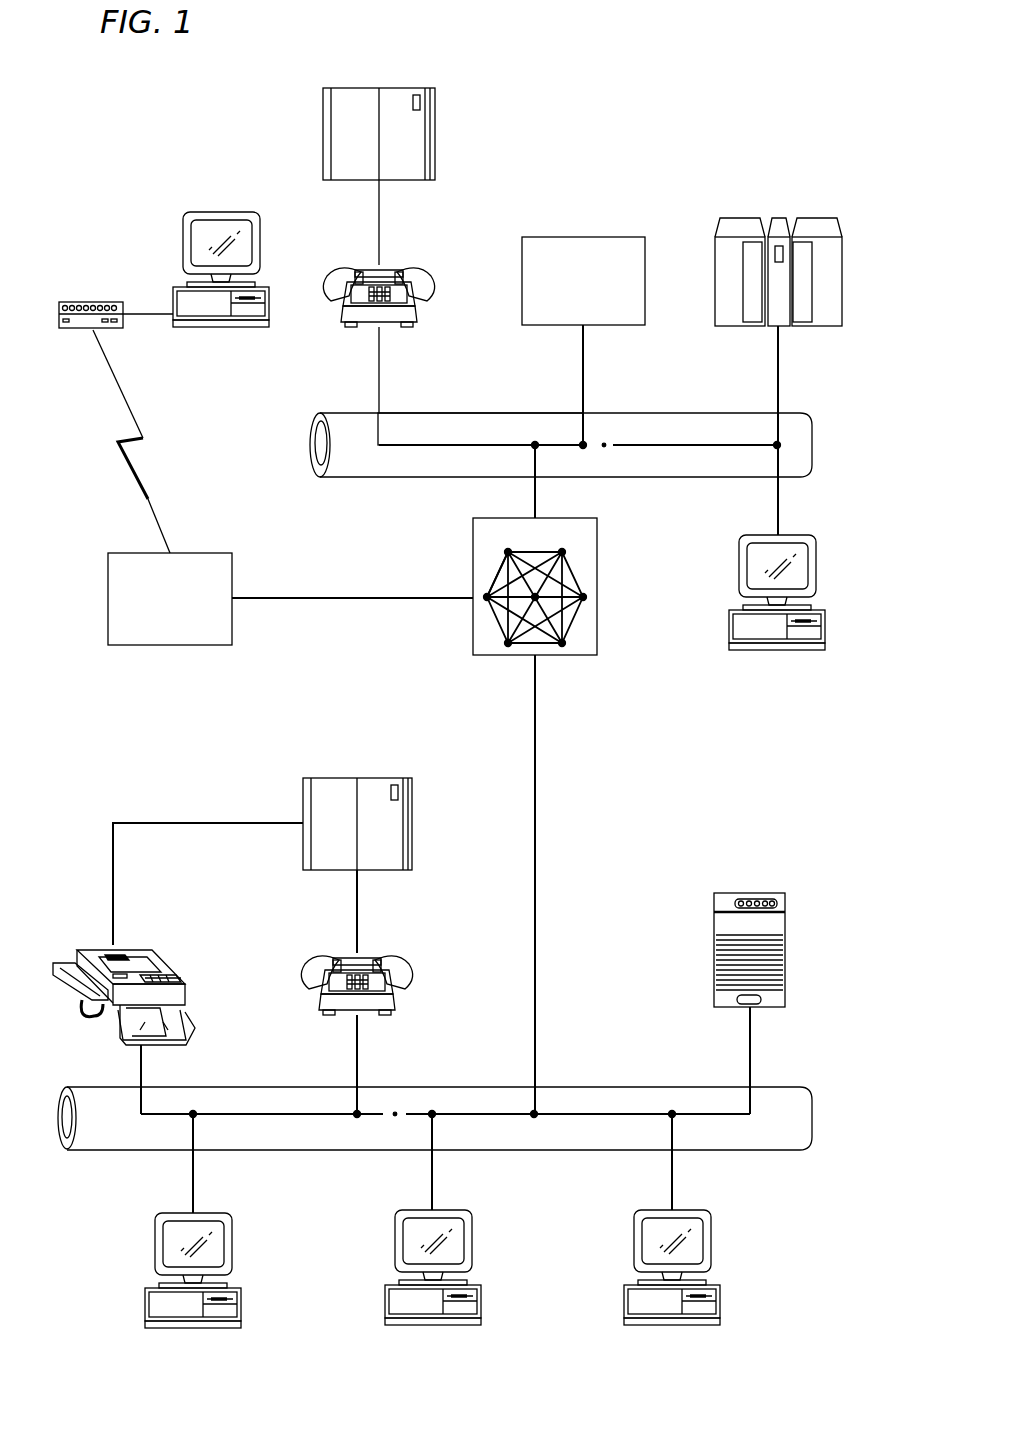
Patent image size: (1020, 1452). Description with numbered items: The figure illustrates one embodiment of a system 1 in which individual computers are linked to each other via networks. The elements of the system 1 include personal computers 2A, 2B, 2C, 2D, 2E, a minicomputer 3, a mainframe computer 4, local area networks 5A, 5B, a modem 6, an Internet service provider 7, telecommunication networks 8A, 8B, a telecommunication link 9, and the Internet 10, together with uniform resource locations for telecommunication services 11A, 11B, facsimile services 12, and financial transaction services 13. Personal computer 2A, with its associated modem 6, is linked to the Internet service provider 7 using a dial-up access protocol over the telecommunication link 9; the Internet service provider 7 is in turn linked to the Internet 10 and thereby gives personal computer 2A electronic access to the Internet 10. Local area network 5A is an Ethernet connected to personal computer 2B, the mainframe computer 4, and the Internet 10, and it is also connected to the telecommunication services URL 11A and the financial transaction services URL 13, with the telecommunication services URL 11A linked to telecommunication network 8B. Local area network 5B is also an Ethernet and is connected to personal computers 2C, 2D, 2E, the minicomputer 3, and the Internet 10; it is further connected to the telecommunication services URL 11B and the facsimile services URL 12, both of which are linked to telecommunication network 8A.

The system 1 is at (151, 77).
The personal computer 2A is at (222, 212).
The personal computer 2B is at (816, 568).
The personal computer 2C is at (233, 1245).
The personal computer 2D is at (472, 1243).
The personal computer 2E is at (708, 1243).
The minicomputer 3 is at (749, 893).
The mainframe computer 4 is at (778, 218).
The local area network 5A is at (310, 442).
The local area network 5B is at (623, 1087).
The modem 6 is at (92, 302).
The Internet service provider 7 is at (108, 598).
The telecommunication network 8A is at (357, 778).
The telecommunication network 8B is at (437, 132).
The telecommunication link 9 is at (136, 474).
The Internet 10 is at (598, 595).
The telecommunication services URL 11A is at (414, 270).
The telecommunication services URL 11B is at (418, 961).
The facsimile services URL 12 is at (172, 958).
The financial transaction services URL 13 is at (583, 237).